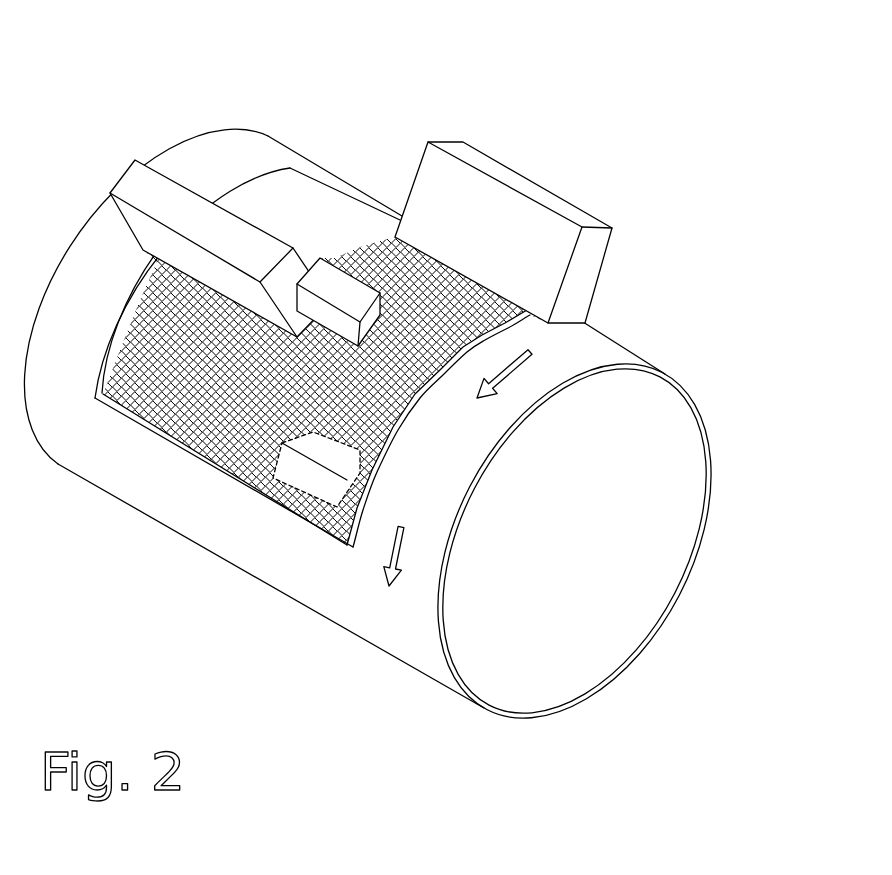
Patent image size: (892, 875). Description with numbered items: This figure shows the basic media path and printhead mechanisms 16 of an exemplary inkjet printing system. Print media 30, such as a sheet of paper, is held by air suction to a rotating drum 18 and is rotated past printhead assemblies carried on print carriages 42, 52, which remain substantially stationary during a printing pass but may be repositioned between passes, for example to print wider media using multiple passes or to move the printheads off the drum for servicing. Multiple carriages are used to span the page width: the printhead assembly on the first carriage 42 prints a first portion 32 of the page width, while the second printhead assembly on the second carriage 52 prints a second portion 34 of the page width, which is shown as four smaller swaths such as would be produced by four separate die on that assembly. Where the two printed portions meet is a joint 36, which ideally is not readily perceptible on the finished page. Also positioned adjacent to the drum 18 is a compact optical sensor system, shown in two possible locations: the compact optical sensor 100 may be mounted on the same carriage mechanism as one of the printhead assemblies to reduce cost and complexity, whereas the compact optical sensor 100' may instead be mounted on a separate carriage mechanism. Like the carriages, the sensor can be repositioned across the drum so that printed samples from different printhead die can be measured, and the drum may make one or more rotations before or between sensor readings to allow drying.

The media path and printhead mechanisms 16 is at (395, 388).
The rotating drum 18 is at (603, 357).
The print media 30 is at (276, 317).
The first portion of the page width 32 is at (377, 390).
The second portion of the page width 34 is at (150, 323).
The joint 36 is at (227, 428).
The first carriage 42 is at (552, 202).
The second carriage 52 is at (157, 193).
The compact optical sensor 100 is at (326, 264).
The compact optical sensor 100' is at (283, 488).